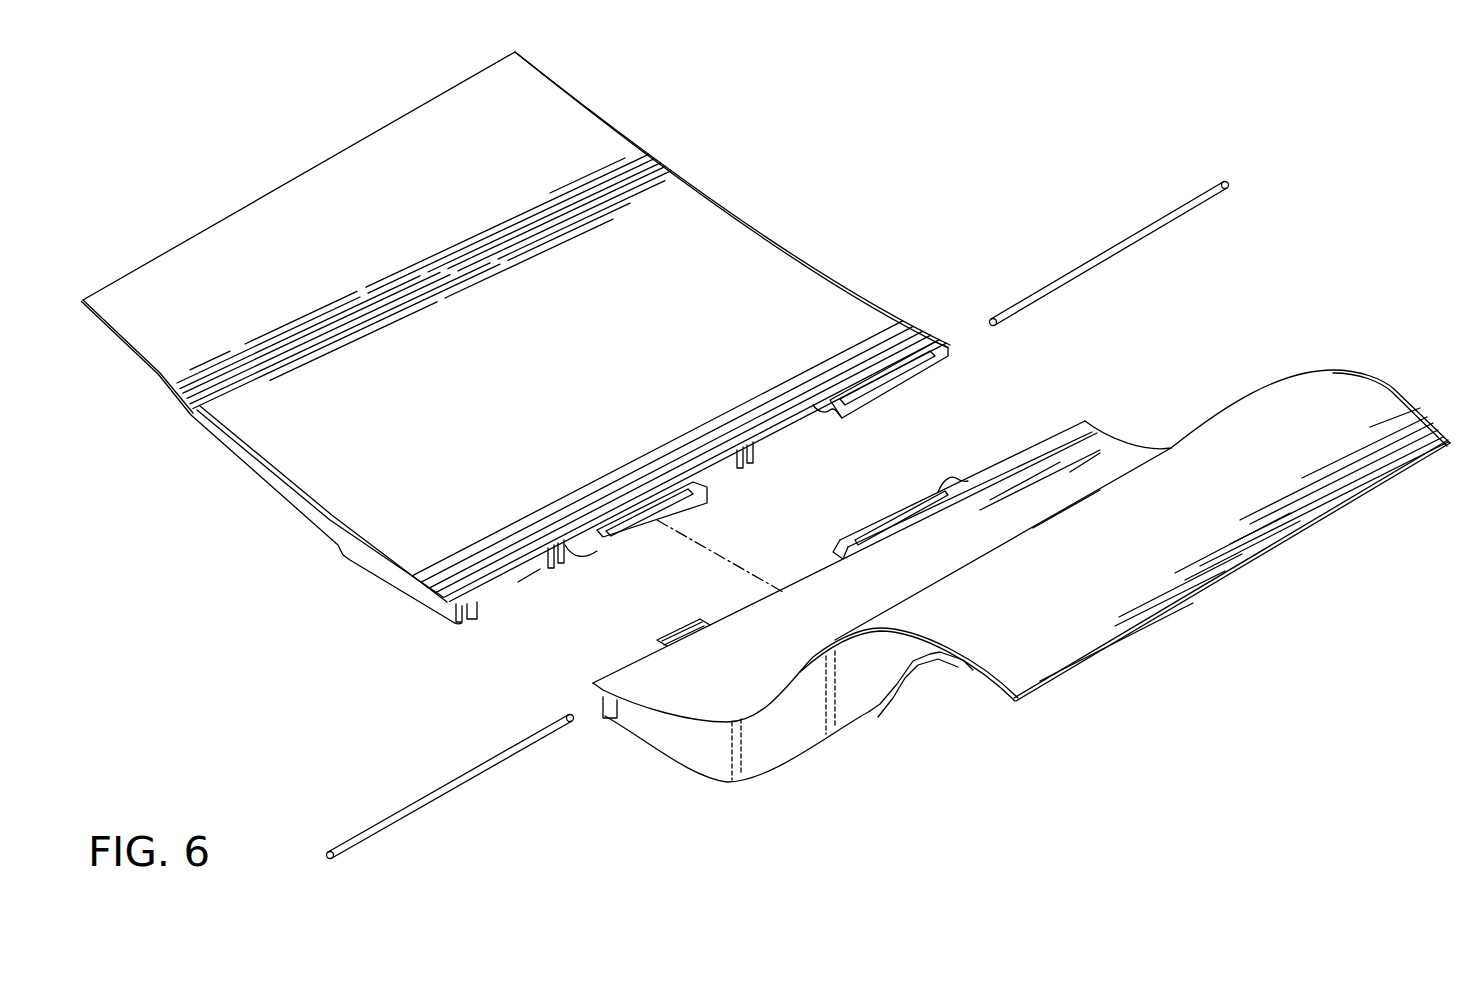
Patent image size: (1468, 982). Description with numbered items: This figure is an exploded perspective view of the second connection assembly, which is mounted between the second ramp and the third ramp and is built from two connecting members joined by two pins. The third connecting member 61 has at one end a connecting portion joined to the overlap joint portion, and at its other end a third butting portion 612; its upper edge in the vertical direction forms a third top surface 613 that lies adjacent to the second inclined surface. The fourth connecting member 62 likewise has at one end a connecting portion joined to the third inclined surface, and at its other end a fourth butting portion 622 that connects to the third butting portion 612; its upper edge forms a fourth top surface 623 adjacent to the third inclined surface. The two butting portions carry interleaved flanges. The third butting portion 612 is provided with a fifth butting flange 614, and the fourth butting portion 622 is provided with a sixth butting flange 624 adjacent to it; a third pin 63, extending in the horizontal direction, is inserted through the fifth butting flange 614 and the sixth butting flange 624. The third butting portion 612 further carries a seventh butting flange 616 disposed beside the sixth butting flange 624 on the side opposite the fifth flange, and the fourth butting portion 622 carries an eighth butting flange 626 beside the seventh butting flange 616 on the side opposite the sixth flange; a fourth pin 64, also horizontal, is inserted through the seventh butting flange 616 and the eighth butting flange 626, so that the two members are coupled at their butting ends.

The third connecting member 61 is at (770, 774).
The third butting portion 612 is at (966, 474).
The third top surface 613 is at (1218, 510).
The fifth butting flange 614 is at (670, 628).
The seventh butting flange 616 is at (862, 532).
The fourth connecting member 62 is at (305, 540).
The fourth butting portion 622 is at (577, 567).
The fourth top surface 623 is at (715, 352).
The sixth butting flange 624 is at (623, 537).
The eighth butting flange 626 is at (897, 360).
The third pin 63 is at (483, 770).
The fourth pin 64 is at (1103, 262).